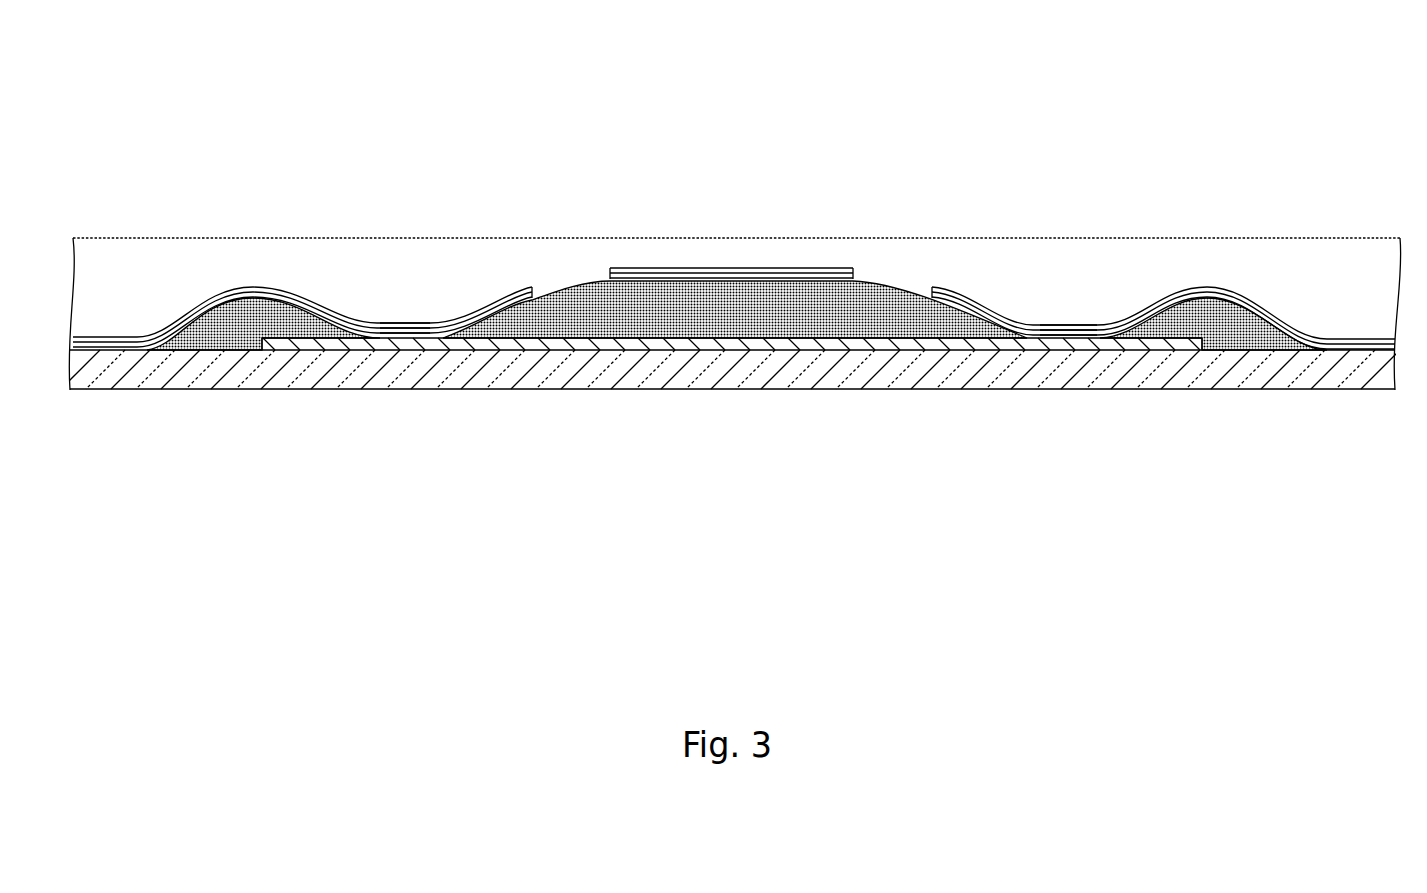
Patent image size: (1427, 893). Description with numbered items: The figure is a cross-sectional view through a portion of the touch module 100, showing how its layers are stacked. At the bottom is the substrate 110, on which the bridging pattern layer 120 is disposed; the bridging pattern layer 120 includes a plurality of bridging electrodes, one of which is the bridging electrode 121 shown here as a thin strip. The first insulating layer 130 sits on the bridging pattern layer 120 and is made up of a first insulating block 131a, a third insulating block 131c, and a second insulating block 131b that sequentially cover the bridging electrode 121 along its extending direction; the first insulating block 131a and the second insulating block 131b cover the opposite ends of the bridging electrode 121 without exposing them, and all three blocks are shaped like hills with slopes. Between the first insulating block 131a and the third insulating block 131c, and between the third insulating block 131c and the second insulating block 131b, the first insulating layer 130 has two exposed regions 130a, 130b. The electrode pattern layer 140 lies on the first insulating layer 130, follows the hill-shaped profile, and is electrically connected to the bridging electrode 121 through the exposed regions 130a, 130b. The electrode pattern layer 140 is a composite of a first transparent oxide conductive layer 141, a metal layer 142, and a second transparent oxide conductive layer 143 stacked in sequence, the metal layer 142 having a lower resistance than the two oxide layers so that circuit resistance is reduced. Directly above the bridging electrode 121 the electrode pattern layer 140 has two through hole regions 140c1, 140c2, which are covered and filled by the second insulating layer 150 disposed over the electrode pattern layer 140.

The touch module 100 is at (1296, 56).
The substrate 110 is at (853, 373).
The bridging pattern layer 120 is at (732, 394).
The bridging electrode 121 is at (652, 343).
The first insulating layer 130 is at (694, 442).
The exposed region 130a is at (403, 320).
The exposed region 130b is at (1067, 319).
The first insulating block 131a is at (225, 333).
The second insulating block 131b is at (1232, 335).
The third insulating block 131c is at (540, 328).
The electrode pattern layer 140 is at (734, 249).
The through hole region 140c1 is at (578, 270).
The through hole region 140c2 is at (896, 270).
The first transparent oxide conductive layer 141 is at (1232, 292).
The metal layer 142 is at (1282, 313).
The second transparent oxide conductive layer 143 is at (1340, 340).
The second insulating layer 150 is at (183, 260).